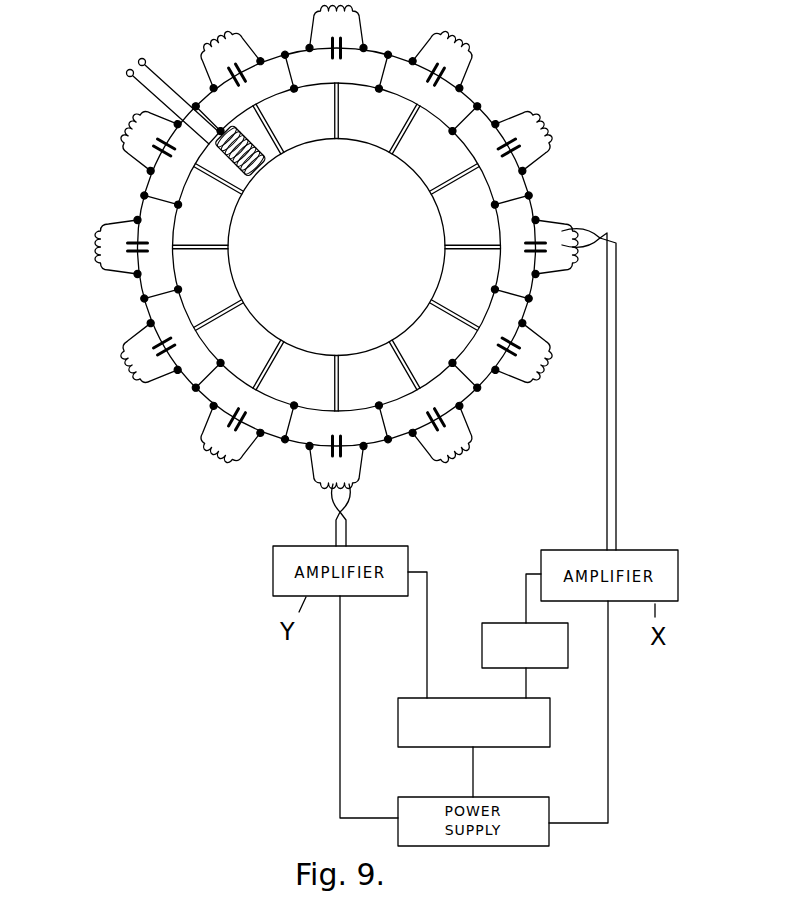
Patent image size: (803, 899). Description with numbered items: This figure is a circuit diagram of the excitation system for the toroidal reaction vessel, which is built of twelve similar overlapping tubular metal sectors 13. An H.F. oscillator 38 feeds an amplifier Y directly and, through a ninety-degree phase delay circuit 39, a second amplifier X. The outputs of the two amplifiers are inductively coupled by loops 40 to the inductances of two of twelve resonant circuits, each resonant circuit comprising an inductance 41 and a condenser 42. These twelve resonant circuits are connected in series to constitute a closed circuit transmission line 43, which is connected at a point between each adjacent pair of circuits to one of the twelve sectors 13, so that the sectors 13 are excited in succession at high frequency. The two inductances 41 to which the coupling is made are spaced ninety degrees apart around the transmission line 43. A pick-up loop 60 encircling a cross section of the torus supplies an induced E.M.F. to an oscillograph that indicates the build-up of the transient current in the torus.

The tubular metal sector 13 is at (355, 132).
The H.F. oscillator 38 is at (540, 749).
The phase delay circuit 39 is at (558, 668).
The loop 40 is at (561, 233).
The inductance 41 is at (568, 288).
The condenser 42 is at (335, 46).
The closed circuit transmission line 43 is at (392, 52).
The pick-up loop 60 is at (254, 172).